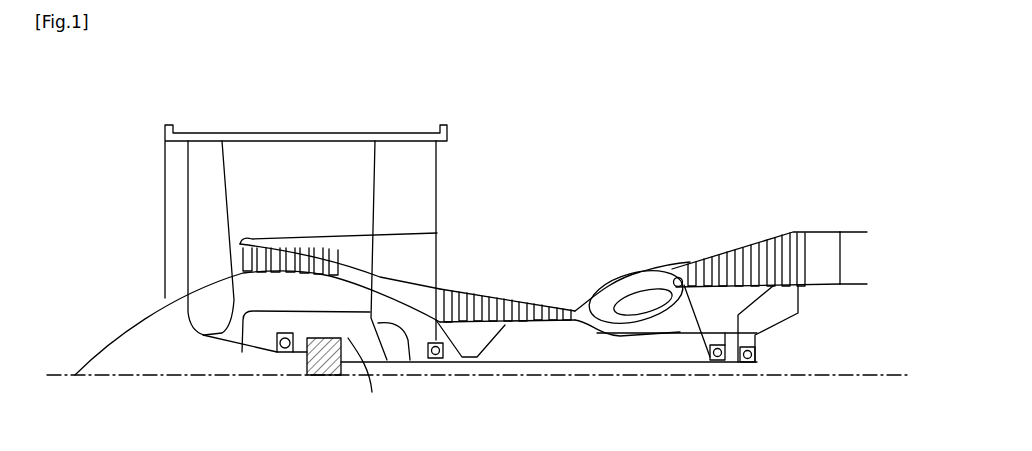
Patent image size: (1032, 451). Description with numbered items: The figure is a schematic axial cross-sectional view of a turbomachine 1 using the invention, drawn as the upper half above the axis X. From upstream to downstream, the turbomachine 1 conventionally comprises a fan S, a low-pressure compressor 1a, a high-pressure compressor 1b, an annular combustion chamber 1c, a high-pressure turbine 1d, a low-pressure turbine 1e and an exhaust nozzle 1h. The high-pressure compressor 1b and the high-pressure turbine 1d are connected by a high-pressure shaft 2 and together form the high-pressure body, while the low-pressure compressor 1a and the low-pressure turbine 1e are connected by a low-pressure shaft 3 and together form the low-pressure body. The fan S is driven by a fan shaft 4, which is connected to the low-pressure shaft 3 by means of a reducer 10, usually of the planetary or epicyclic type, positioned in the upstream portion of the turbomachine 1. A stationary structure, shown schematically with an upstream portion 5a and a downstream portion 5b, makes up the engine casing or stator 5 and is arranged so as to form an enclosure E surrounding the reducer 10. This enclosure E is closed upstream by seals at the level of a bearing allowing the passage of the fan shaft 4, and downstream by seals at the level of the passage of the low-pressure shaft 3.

The turbomachine 1 is at (553, 204).
The low-pressure compressor 1a is at (262, 242).
The high-pressure compressor 1b is at (469, 292).
The annular combustion chamber 1c is at (630, 293).
The high-pressure turbine 1d is at (677, 277).
The low-pressure turbine 1e is at (793, 237).
The exhaust nozzle 1h is at (853, 252).
The high-pressure shaft 2 is at (620, 336).
The low-pressure shaft 3 is at (531, 363).
The fan shaft 4 is at (268, 353).
The engine casing or stator 5 is at (355, 309).
The upstream portion 5a is at (246, 346).
The downstream portion 5b is at (410, 360).
The reducer 10 is at (322, 360).
The enclosure E is at (362, 378).
The fan S is at (198, 190).
The rotation axis X is at (57, 378).